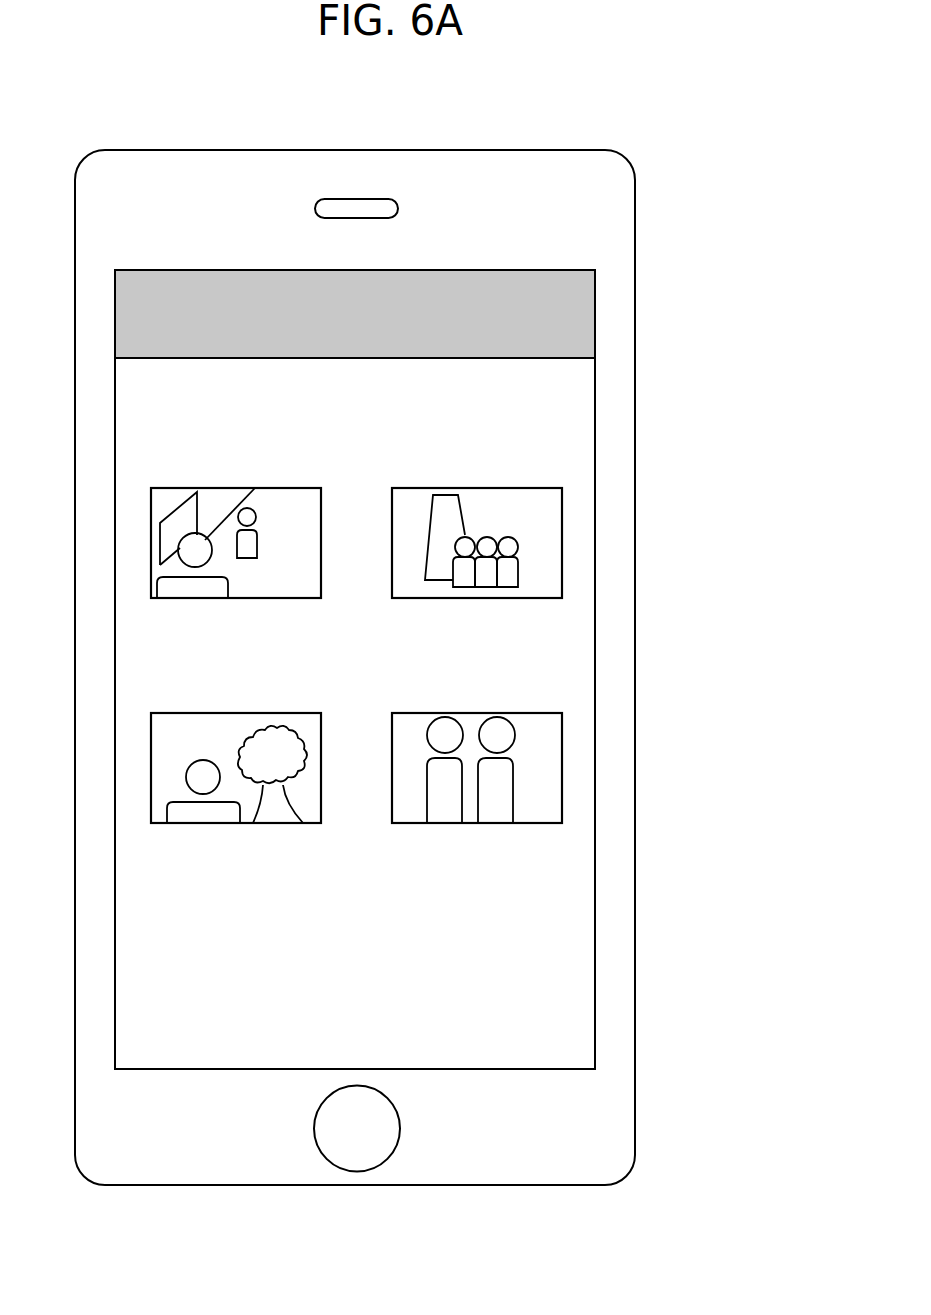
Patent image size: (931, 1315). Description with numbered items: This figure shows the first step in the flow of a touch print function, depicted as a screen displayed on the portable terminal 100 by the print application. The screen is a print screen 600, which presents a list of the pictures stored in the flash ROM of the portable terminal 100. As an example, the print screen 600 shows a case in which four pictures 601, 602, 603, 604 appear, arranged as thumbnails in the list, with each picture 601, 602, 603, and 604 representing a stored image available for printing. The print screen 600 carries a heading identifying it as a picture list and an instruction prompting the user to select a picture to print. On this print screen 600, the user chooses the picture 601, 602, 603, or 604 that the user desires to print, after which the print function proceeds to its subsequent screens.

The portable terminal 100 is at (590, 123).
The print screen 600 is at (355, 761).
The picture 601 is at (268, 587).
The picture 602 is at (535, 587).
The picture 603 is at (273, 808).
The picture 604 is at (535, 807).